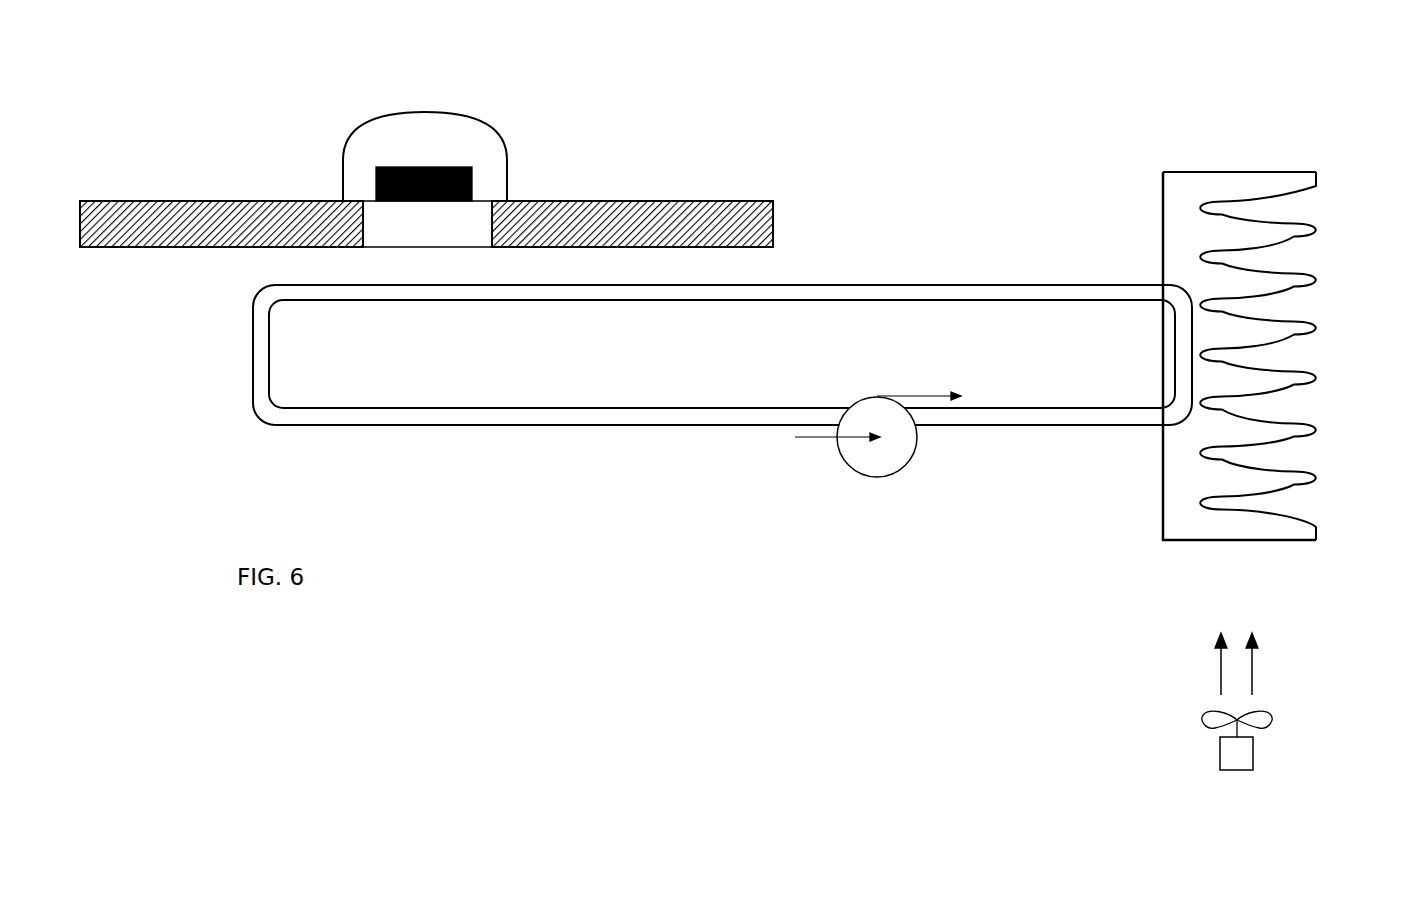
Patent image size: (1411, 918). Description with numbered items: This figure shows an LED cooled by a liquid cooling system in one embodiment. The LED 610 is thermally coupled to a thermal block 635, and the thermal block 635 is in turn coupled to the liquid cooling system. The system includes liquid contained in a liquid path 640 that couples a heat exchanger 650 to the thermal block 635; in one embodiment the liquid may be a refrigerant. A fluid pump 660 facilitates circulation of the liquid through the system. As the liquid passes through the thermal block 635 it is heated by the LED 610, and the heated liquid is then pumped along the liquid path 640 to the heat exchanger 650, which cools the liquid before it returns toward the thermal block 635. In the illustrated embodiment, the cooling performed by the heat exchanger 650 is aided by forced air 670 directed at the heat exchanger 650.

The LED 610 is at (487, 138).
The thermal block 635 is at (143, 277).
The liquid path 640 is at (878, 285).
The heat exchanger 650 is at (1177, 185).
The fluid pump 660 is at (895, 459).
The forced air 670 is at (1263, 663).